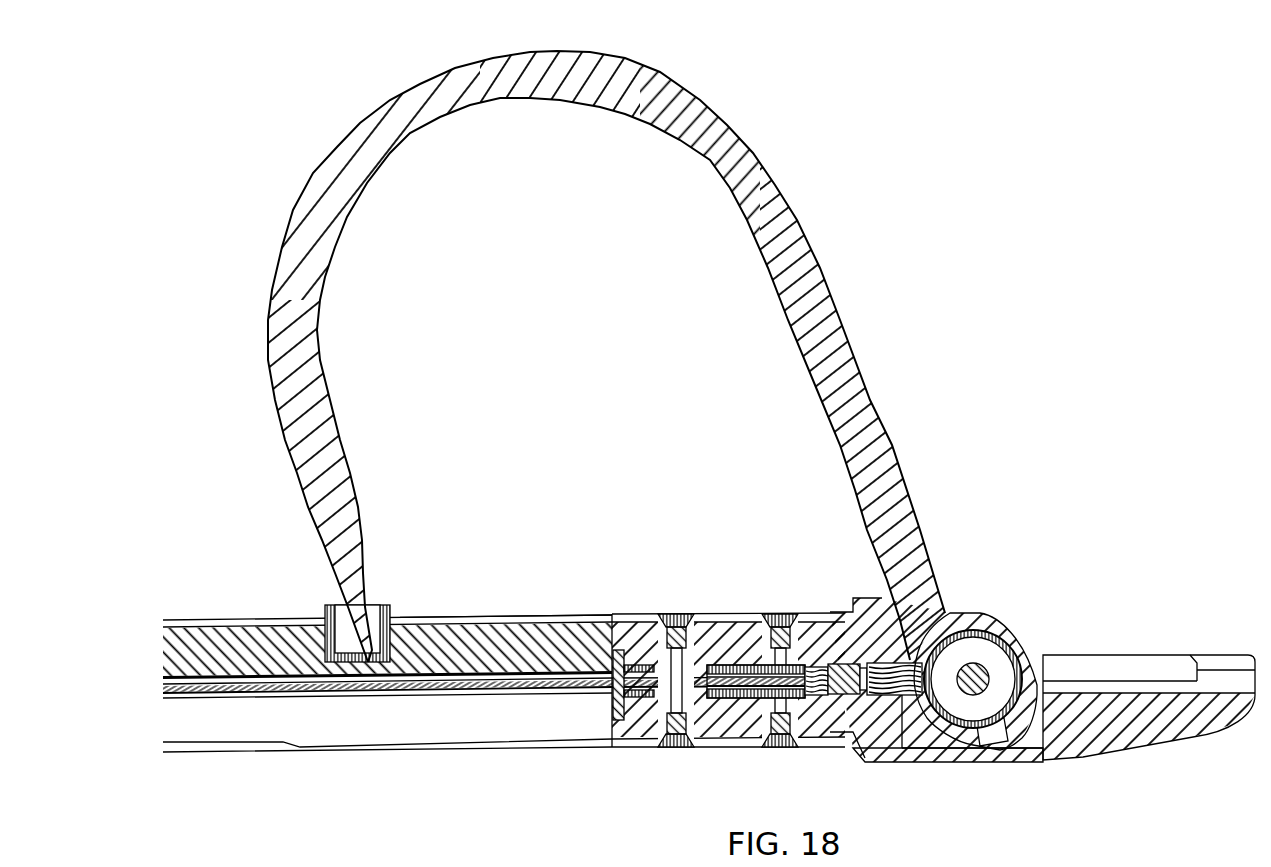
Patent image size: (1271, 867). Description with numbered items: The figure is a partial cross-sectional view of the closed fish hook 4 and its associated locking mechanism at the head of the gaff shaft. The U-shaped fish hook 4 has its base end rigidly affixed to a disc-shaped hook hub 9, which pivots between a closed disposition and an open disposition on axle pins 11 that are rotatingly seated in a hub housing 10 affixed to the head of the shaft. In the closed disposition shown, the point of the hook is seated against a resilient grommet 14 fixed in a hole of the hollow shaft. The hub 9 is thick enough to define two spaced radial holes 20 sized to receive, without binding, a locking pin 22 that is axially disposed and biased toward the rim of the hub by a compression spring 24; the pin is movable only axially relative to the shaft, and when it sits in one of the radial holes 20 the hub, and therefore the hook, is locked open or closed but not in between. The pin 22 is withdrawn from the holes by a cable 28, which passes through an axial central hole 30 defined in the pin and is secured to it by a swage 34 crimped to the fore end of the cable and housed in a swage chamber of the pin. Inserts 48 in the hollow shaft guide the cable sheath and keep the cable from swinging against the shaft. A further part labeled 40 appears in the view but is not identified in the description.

The fish hook 4 is at (893, 447).
The hook hub 9 is at (1030, 647).
The hub housing 10 is at (1190, 742).
The axle pins 11 is at (1030, 647).
The grommet 14 is at (380, 602).
The radial holes 20 is at (990, 737).
The locking pin 22 is at (873, 630).
The compression spring 24 is at (738, 658).
The cable 28 is at (242, 619).
The axial central hole 30 is at (835, 620).
The swage 34 is at (835, 750).
The bushing 40 is at (983, 627).
The inserts 48 is at (490, 617).